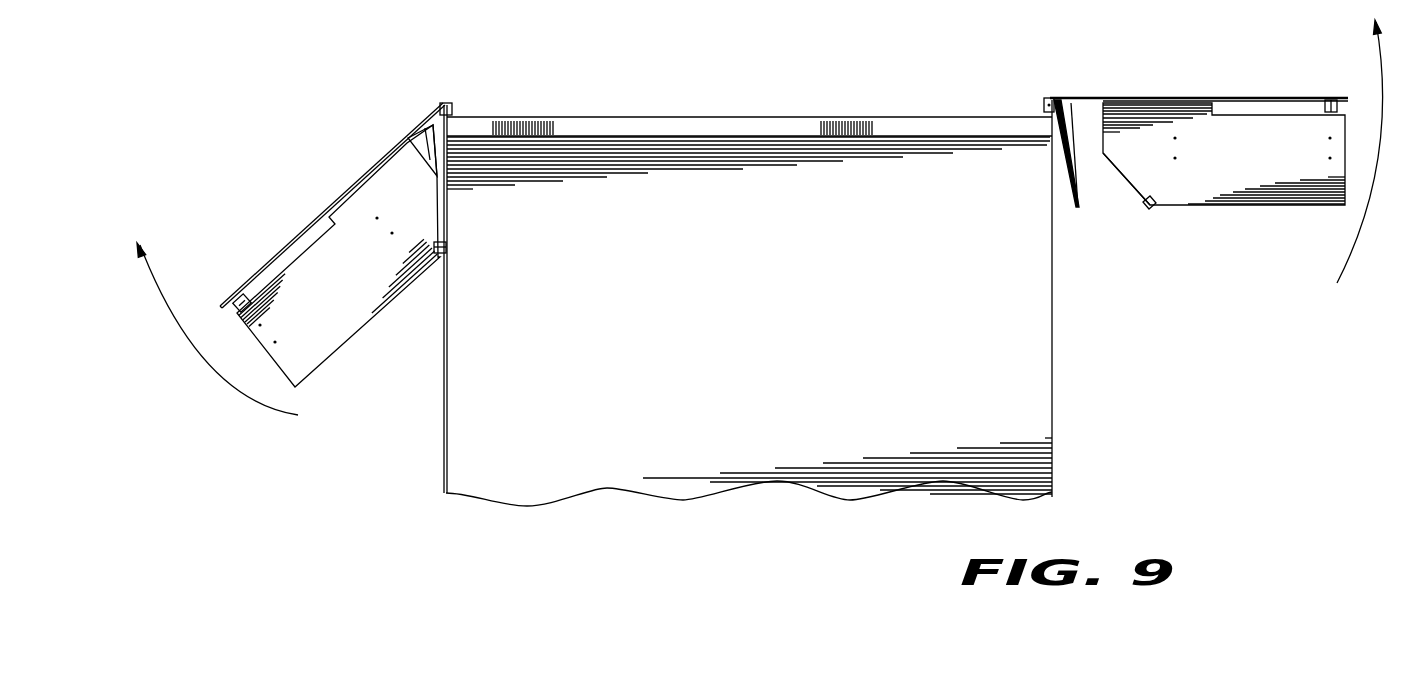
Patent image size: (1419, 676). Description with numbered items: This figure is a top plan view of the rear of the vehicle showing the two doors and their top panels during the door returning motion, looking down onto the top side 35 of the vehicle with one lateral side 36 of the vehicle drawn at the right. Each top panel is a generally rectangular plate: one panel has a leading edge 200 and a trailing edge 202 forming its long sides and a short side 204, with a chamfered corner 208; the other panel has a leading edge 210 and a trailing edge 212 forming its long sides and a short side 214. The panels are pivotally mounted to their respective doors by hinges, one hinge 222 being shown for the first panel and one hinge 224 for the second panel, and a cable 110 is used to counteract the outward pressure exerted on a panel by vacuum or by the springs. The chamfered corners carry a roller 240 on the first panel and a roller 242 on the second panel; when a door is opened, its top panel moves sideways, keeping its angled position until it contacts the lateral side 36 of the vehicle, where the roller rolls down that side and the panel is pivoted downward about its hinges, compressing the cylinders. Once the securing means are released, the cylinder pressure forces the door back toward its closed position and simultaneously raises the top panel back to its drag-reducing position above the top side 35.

The top side 35 is at (492, 438).
The lateral side 36 is at (1058, 366).
The cable 110 is at (418, 139).
The leading edge 200 is at (1199, 156).
The trailing edge 202 is at (1228, 206).
The short side 204 is at (1345, 170).
The chamfered corner 208 is at (1127, 178).
The leading edge 210 is at (305, 250).
The trailing edge 212 is at (322, 363).
The short side 214 is at (272, 358).
The hinge 222 is at (1333, 100).
The hinge 224 is at (238, 296).
The roller 240 is at (1147, 208).
The roller 242 is at (449, 247).